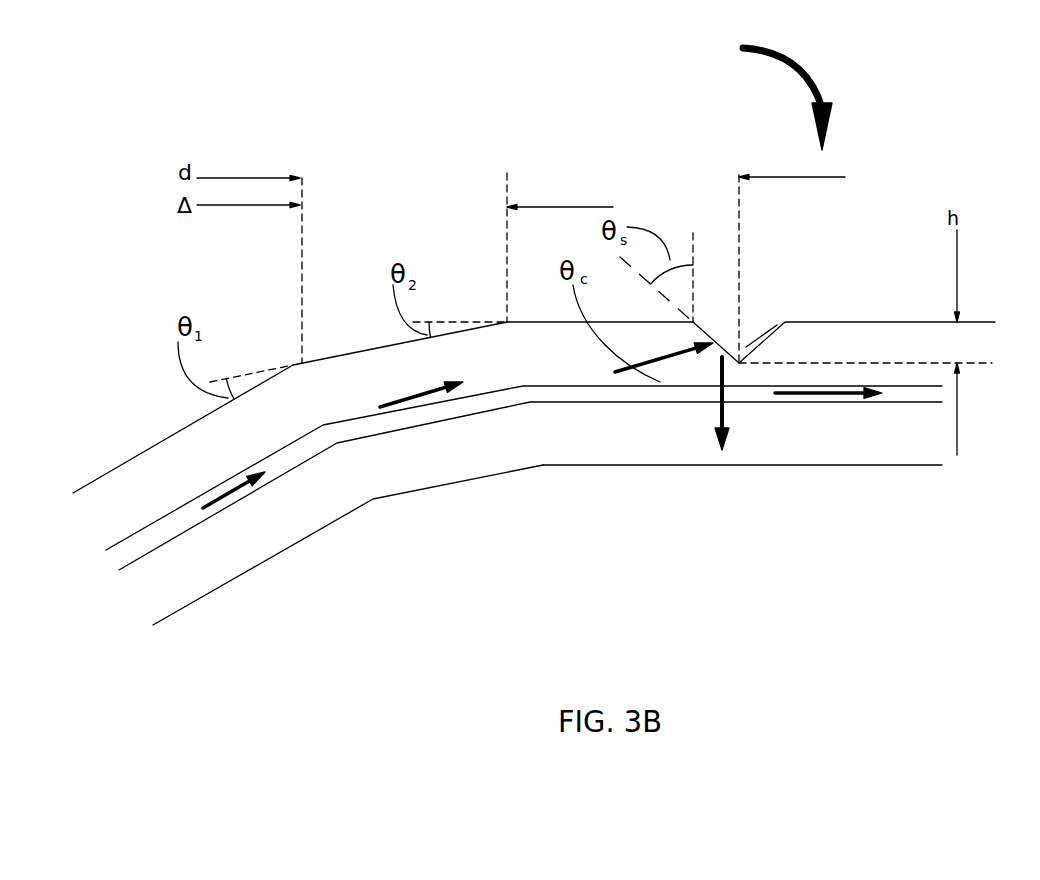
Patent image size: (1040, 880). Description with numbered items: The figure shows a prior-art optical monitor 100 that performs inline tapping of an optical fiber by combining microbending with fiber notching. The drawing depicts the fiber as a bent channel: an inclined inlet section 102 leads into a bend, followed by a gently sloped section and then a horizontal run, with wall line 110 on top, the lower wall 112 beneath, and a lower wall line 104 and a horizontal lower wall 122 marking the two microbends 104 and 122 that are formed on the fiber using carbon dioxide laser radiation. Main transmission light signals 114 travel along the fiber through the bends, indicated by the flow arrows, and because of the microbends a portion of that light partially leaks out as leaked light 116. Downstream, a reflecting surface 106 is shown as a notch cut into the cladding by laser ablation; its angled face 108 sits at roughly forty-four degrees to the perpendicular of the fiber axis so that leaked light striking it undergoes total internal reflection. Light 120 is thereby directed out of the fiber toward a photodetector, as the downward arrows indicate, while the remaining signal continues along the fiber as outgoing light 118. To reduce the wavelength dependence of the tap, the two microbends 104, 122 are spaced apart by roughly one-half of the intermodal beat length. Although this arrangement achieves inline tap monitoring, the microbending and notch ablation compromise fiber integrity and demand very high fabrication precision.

The optical monitor 100 is at (750, 93).
The inlet wall section 102 is at (190, 420).
The microbend 104 is at (374, 500).
The reflecting surface 106 is at (712, 327).
The lip surface 108 is at (747, 343).
The upper passage 110 is at (327, 387).
The lower passage wall 112 is at (128, 566).
The main transmission light signals 114 is at (215, 505).
The leaked light 116 is at (413, 400).
The outlet flow 118 is at (807, 395).
The tapped light 120 is at (613, 375).
The microbend 122 is at (543, 467).